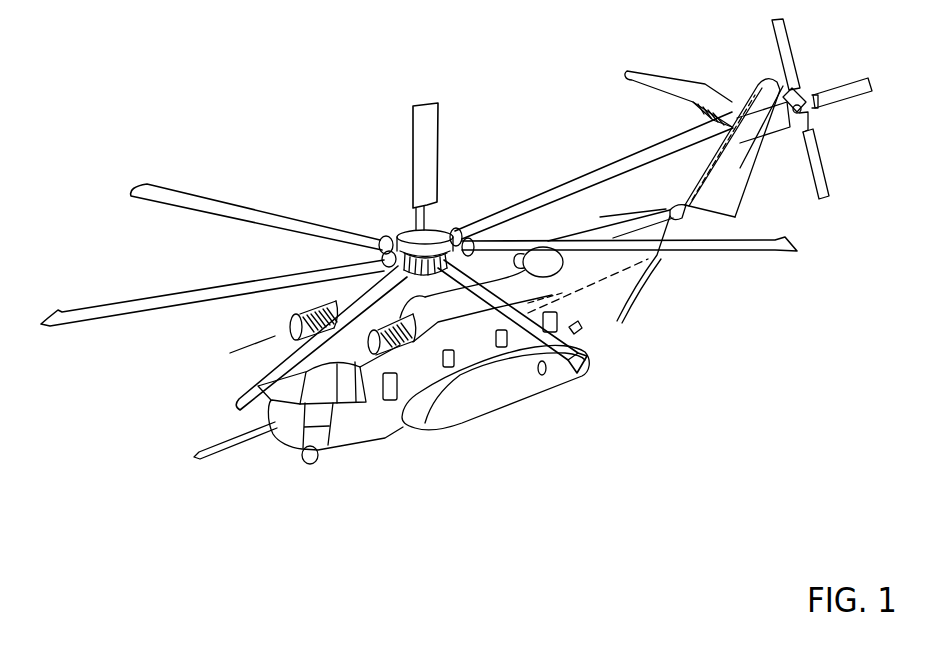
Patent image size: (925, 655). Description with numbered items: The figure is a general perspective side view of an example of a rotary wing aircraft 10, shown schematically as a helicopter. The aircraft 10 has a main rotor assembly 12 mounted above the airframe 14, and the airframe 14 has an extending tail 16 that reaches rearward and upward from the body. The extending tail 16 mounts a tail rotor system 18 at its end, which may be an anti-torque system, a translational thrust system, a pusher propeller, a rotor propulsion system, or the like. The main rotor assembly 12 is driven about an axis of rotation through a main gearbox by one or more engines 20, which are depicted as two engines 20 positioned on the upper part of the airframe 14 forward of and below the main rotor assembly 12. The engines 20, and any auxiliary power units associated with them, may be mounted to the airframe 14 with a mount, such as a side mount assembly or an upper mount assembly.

The rotary wing aircraft 10 is at (525, 110).
The main rotor assembly 12 is at (374, 196).
The airframe 14 is at (588, 313).
The extending tail 16 is at (685, 218).
The tail rotor system 18 is at (818, 119).
The engines 20 is at (343, 299).